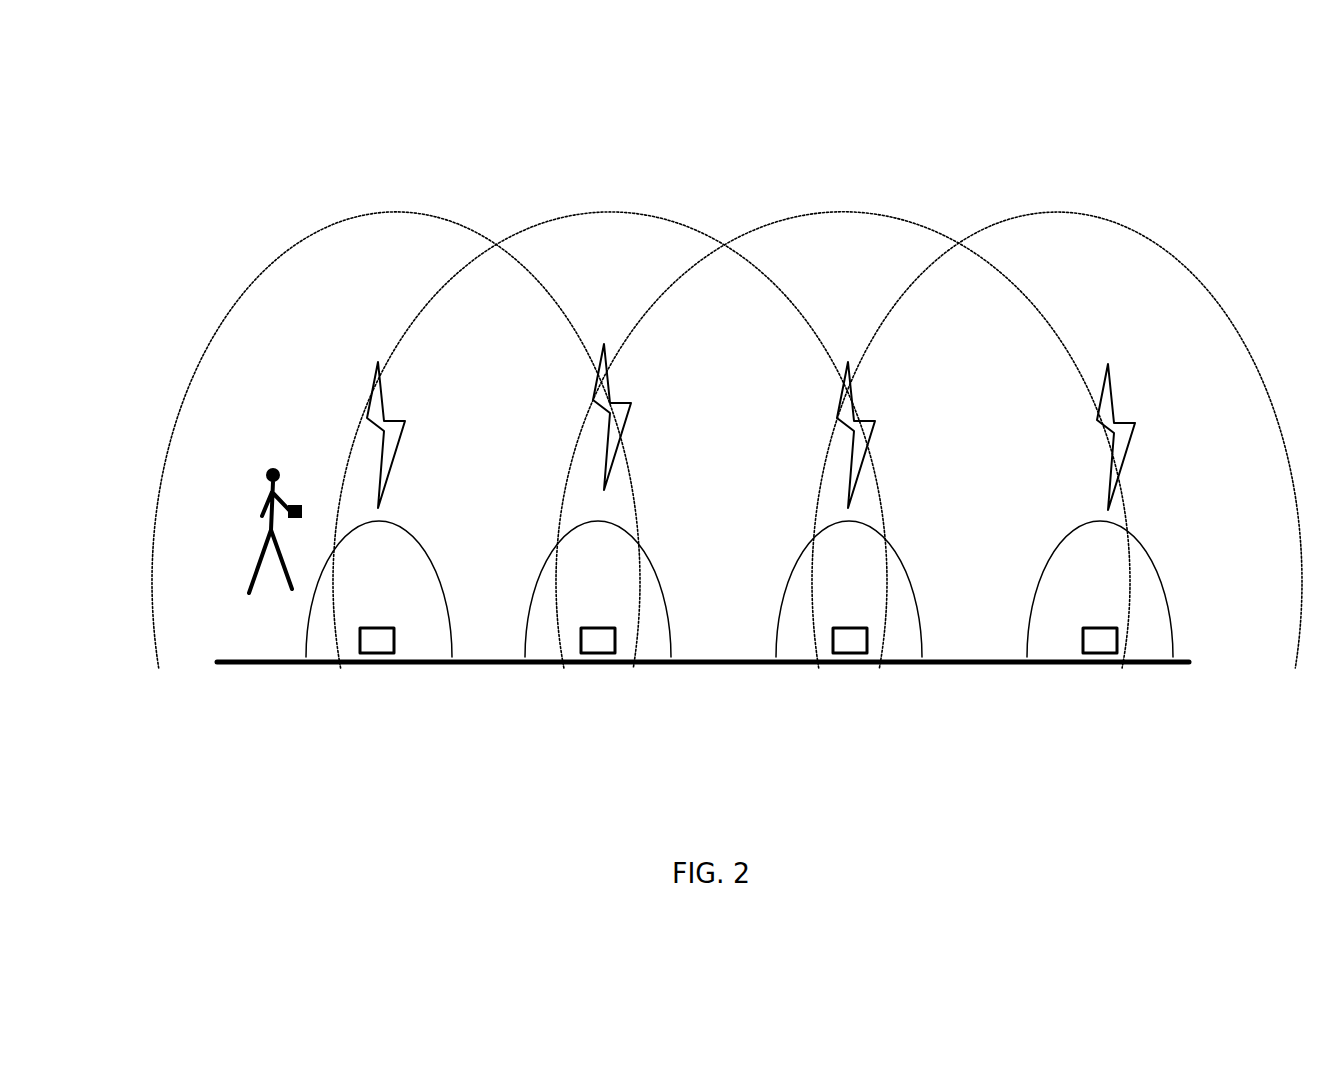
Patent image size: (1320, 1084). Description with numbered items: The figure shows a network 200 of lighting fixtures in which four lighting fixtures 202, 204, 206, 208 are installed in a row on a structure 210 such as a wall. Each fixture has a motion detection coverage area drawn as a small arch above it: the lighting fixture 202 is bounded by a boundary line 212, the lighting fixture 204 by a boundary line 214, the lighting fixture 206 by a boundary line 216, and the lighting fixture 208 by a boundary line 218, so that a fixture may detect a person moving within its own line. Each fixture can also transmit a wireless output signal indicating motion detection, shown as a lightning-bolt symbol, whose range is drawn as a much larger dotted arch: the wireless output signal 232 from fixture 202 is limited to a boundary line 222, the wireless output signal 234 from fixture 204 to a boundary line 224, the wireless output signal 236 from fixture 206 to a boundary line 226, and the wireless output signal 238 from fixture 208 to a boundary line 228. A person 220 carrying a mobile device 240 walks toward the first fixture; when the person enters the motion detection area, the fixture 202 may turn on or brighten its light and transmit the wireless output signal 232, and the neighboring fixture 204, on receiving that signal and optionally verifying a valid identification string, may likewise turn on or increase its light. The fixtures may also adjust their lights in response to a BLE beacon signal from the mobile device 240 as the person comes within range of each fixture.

The network of lighting fixtures 200 is at (185, 210).
The lighting fixture 202 is at (387, 653).
The lighting fixture 204 is at (603, 655).
The lighting fixture 206 is at (855, 655).
The lighting fixture 208 is at (1103, 653).
The structure 210 is at (283, 664).
The boundary line 212 is at (428, 548).
The boundary line 214 is at (660, 568).
The boundary line 216 is at (905, 552).
The boundary line 218 is at (1148, 555).
The person 220 is at (264, 509).
The boundary line 222 is at (362, 216).
The boundary line 224 is at (583, 212).
The boundary line 226 is at (828, 212).
The boundary line 228 is at (1048, 210).
The wireless output signal 232 is at (375, 422).
The wireless output signal 234 is at (632, 404).
The wireless output signal 236 is at (862, 432).
The wireless output signal 238 is at (1120, 437).
The mobile device 240 is at (298, 503).